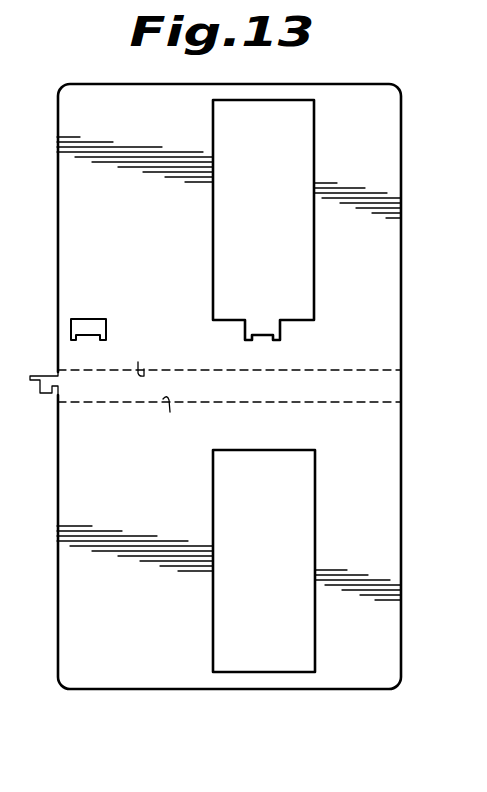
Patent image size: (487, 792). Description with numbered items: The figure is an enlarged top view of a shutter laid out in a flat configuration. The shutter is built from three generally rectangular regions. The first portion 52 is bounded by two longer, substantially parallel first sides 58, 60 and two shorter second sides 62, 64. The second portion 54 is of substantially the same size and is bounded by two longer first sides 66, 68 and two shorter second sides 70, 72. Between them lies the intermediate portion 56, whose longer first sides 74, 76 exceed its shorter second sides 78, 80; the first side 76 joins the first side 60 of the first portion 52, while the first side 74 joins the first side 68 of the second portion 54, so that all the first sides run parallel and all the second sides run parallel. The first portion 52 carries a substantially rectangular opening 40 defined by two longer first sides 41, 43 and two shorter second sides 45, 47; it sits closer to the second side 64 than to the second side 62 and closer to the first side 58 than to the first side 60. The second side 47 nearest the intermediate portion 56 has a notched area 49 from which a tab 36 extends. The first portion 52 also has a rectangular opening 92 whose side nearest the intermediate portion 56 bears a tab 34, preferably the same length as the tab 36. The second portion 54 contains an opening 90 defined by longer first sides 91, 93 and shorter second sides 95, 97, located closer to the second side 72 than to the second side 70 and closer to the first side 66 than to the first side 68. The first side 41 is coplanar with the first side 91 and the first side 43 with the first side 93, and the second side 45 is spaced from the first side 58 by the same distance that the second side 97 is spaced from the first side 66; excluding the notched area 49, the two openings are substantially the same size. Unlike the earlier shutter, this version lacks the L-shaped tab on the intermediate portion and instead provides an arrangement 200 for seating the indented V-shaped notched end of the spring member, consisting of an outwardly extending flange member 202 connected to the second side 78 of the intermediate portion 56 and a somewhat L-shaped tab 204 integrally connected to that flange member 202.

The first portion 52 is at (110, 97).
The first side of first portion 58 is at (157, 85).
The second side of first portion 62 is at (62, 240).
The second side of first portion 64 is at (400, 245).
The second side of second portion 70 is at (60, 500).
The second side of second portion 72 is at (400, 528).
The second portion 54 is at (95, 663).
The first side of second portion 66 is at (148, 686).
The opening 40 is at (303, 115).
The second side of opening 45 is at (260, 101).
The first side of opening 41 is at (214, 225).
The first side of opening 43 is at (313, 230).
The second side of opening 47 is at (230, 320).
The notched area 49 is at (250, 333).
The tab 36 is at (267, 335).
The rectangular opening 92 is at (82, 320).
The tab 34 is at (102, 320).
The first side of first portion 60 is at (185, 369).
The first side of second portion 68 is at (130, 404).
The first side of intermediate portion 76 is at (138, 362).
The first side of intermediate portion 74 is at (170, 412).
The intermediate portion 56 is at (340, 381).
The second side of intermediate portion 80 is at (401, 388).
The arrangement for seating the spring member 200 is at (47, 370).
The flange member 202 is at (38, 376).
The L-shaped tab 204 is at (48, 394).
The second side of intermediate portion 78 is at (60, 395).
The opening 90 is at (300, 635).
The second side of opening 95 is at (265, 452).
The first side of opening 93 is at (313, 542).
The first side of opening 91 is at (215, 575).
The second side of opening 97 is at (260, 671).